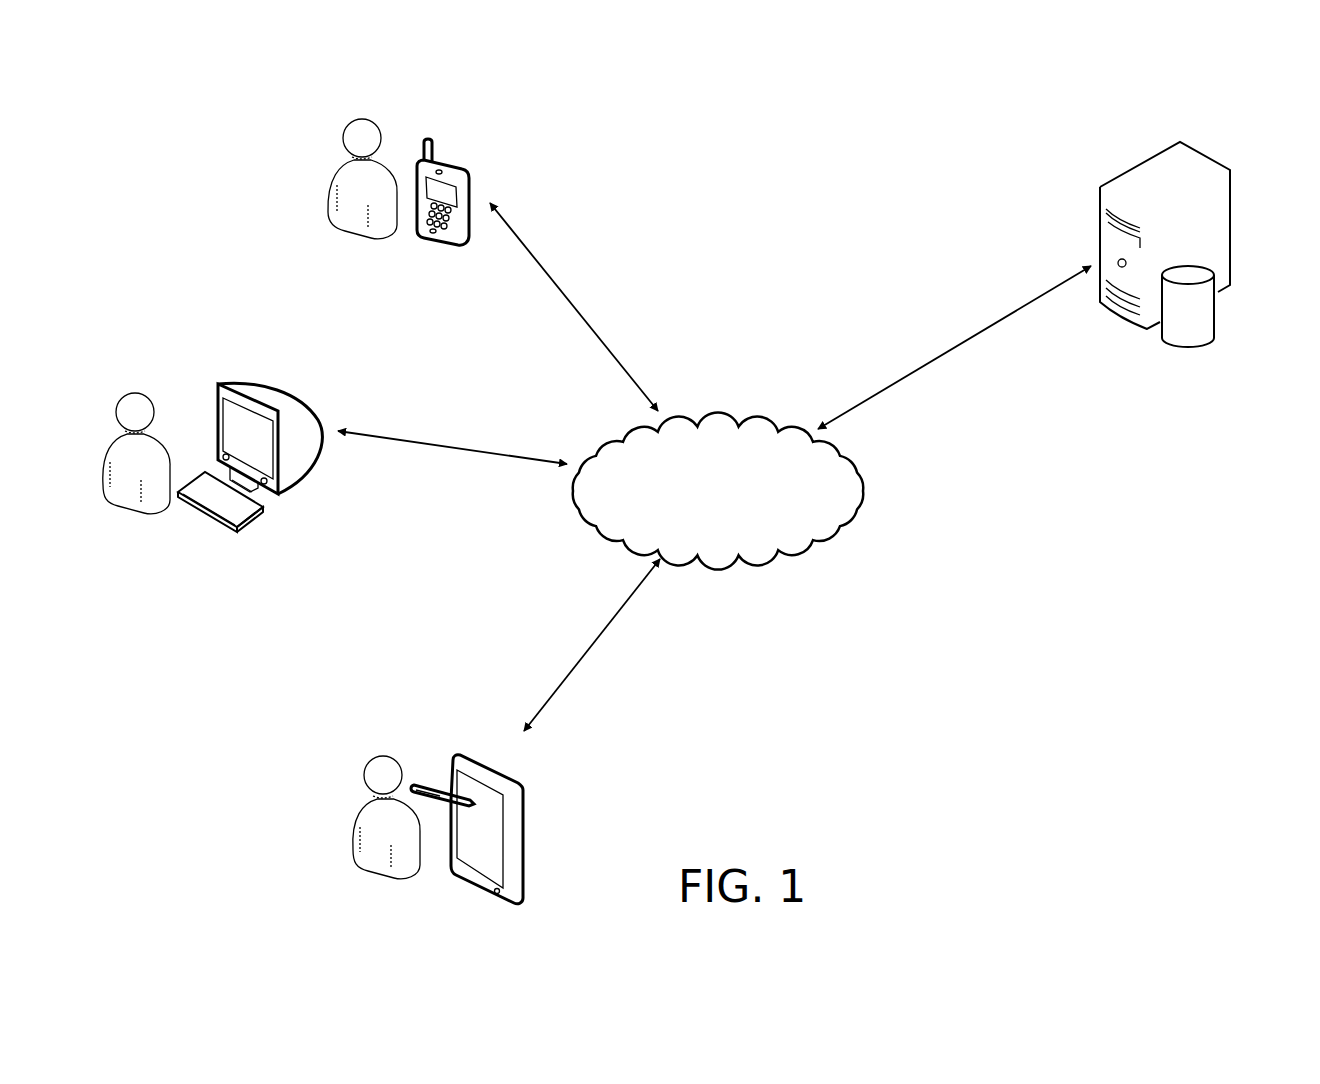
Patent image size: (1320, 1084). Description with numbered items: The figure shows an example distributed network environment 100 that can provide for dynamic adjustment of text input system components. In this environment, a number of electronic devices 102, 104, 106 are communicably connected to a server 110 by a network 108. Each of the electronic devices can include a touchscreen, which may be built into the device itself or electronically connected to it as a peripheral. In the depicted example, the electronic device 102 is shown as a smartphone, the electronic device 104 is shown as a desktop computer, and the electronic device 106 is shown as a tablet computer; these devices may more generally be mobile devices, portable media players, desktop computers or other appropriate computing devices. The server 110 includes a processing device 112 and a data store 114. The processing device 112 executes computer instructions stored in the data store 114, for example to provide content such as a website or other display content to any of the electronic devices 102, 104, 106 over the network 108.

The network environment 100 is at (841, 160).
The electronic device 102 is at (457, 163).
The electronic device 104 is at (296, 405).
The electronic device 106 is at (518, 787).
The network 108 is at (718, 422).
The server 110 is at (1107, 333).
The processing device 112 is at (1207, 160).
The data store 114 is at (1214, 341).